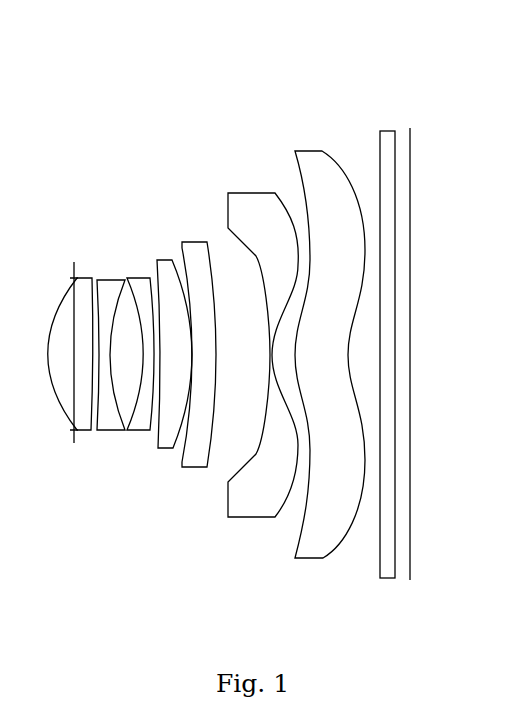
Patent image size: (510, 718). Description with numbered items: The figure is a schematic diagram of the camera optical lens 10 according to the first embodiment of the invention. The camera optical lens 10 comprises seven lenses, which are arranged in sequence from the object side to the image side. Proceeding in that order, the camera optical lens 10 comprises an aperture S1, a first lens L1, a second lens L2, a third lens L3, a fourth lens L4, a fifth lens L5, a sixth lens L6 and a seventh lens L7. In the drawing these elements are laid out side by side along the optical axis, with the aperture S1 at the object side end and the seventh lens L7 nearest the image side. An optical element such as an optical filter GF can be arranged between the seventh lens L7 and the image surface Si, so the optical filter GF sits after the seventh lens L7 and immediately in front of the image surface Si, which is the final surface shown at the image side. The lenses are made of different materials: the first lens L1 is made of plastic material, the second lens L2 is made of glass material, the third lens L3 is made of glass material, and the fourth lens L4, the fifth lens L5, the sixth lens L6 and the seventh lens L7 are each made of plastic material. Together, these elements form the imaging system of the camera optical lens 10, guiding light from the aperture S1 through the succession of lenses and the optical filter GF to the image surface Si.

The camera optical lens 10 is at (265, 50).
The aperture S1 is at (60, 352).
The first lens L1 is at (70, 337).
The second lens L2 is at (111, 345).
The third lens L3 is at (140, 344).
The fourth lens L4 is at (174, 343).
The fifth lens L5 is at (199, 344).
The sixth lens L6 is at (263, 340).
The seventh lens L7 is at (330, 337).
The optical filter GF is at (381, 343).
The image surface Si is at (417, 346).